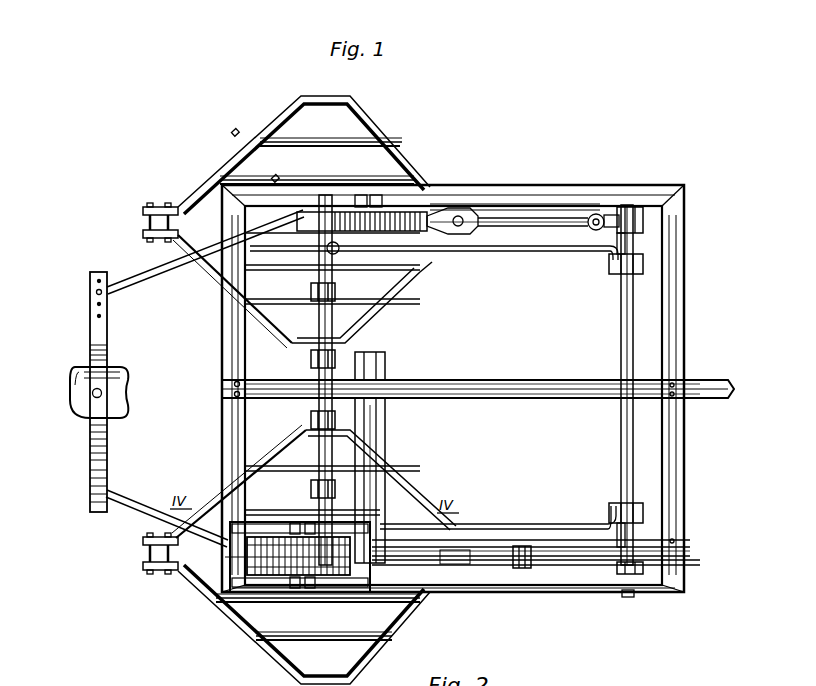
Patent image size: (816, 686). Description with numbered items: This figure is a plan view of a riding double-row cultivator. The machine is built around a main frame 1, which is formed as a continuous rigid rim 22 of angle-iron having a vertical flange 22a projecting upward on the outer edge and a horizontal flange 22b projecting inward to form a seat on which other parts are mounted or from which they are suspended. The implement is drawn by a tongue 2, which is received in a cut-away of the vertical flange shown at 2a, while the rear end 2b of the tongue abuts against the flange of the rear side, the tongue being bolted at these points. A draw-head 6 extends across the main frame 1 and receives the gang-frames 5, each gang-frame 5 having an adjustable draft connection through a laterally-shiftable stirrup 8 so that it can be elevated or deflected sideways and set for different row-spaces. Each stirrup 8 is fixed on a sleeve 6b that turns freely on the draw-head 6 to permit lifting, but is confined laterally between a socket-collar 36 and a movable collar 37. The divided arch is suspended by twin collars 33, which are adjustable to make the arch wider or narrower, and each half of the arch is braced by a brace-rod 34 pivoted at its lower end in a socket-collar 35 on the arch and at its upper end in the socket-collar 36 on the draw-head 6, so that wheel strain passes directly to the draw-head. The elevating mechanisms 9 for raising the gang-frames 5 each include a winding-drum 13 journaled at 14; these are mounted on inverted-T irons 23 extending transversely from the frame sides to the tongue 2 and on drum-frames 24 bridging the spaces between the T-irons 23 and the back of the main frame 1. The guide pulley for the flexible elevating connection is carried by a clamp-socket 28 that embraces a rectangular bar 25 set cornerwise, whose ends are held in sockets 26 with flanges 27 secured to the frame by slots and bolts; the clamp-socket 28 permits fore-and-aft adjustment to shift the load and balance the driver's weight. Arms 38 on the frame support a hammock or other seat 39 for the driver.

The main frame 1 is at (686, 332).
The tongue 2 is at (726, 385).
The cut-away of vertical flange for tongue 2a is at (688, 398).
The rear end of tongue 2b is at (232, 387).
The gang-frame 5 is at (370, 120).
The draw-head 6 is at (620, 433).
The sleeve 6b is at (628, 244).
The stirrup 8 is at (615, 232).
The elevating mechanism 9 is at (345, 590).
The winding-drum 13 is at (247, 557).
The journal of winding-drum 14 is at (300, 590).
The continuous rigid rim 22 is at (458, 196).
The vertical flange 22a is at (506, 196).
The horizontal flange 22b is at (568, 196).
The inverted-T iron 23 is at (387, 362).
The drum-frame 24 is at (265, 528).
The rectangular bar 25 is at (558, 570).
The socket 26 is at (392, 592).
The flange of socket 27 is at (692, 541).
The clamp-socket 28 is at (518, 572).
The twin collar 33 is at (336, 292).
The brace-rod 34 is at (543, 531).
The socket-collar 35 is at (327, 248).
The socket-collar 36 is at (609, 264).
The movable collar 37 is at (646, 209).
The arm 38 is at (123, 282).
The seat 39 is at (70, 394).